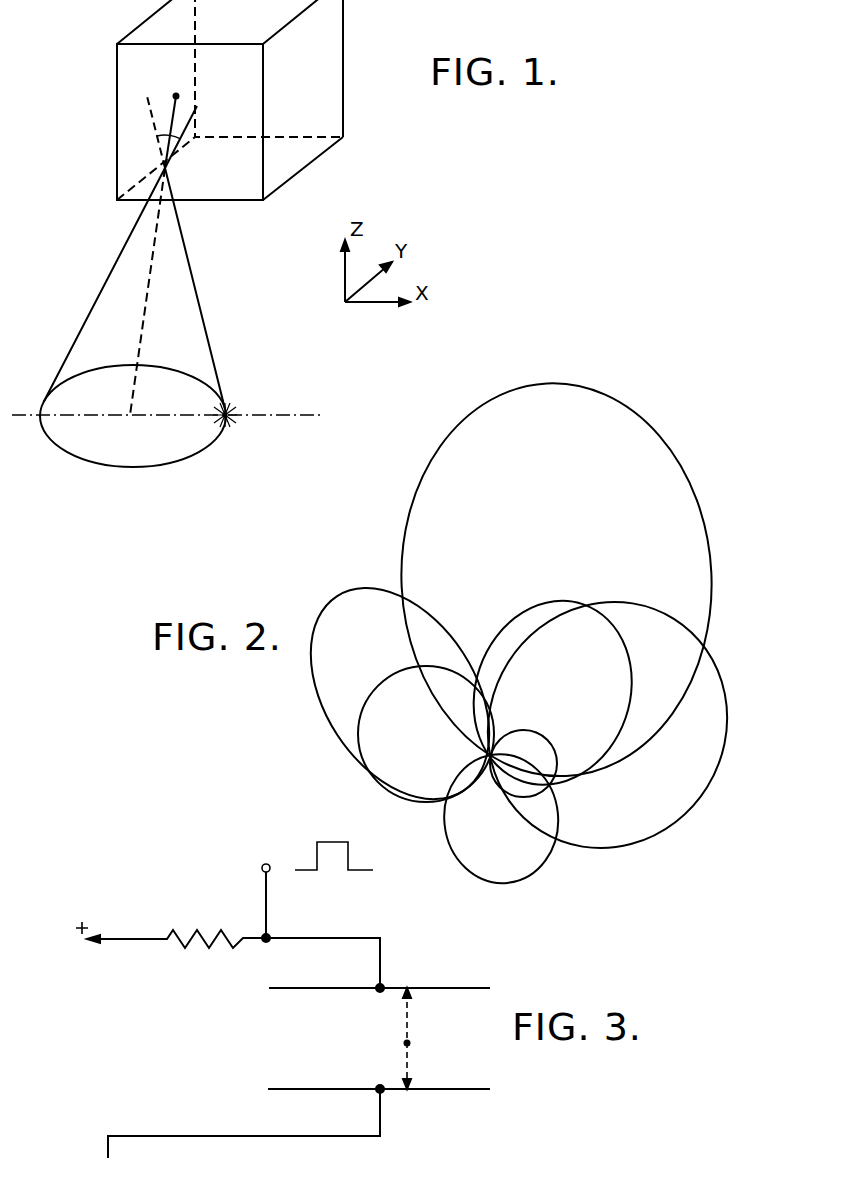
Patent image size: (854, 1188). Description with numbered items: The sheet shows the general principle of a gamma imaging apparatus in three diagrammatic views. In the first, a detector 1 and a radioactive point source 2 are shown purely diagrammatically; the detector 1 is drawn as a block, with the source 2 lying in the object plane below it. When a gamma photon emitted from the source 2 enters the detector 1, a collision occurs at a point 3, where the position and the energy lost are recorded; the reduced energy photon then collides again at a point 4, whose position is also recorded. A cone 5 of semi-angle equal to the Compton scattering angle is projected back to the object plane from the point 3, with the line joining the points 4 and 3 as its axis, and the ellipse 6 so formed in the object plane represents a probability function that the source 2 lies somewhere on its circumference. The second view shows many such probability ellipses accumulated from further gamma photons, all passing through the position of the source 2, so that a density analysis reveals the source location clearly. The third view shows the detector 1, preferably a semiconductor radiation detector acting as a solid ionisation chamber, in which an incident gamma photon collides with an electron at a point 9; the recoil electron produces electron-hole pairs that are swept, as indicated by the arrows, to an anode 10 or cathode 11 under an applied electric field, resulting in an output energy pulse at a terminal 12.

In FIG. 1, the detector 1 is at (327, 58).
In FIG. 3, the detector 1 is at (345, 1051).
In FIG. 1, the radioactive point source 2 is at (236, 409).
In FIG. 2, the radioactive point source 2 is at (489, 756).
In FIG. 1, the point 3 is at (168, 170).
In FIG. 1, the point 4 is at (176, 96).
In FIG. 1, the cone 5 is at (198, 301).
In FIG. 1, the ellipse 6 is at (68, 449).
In FIG. 3, the point 9 is at (412, 1040).
In FIG. 3, the anode 10 is at (427, 987).
In FIG. 3, the cathode 11 is at (307, 1090).
In FIG. 3, the terminal 12 is at (305, 890).